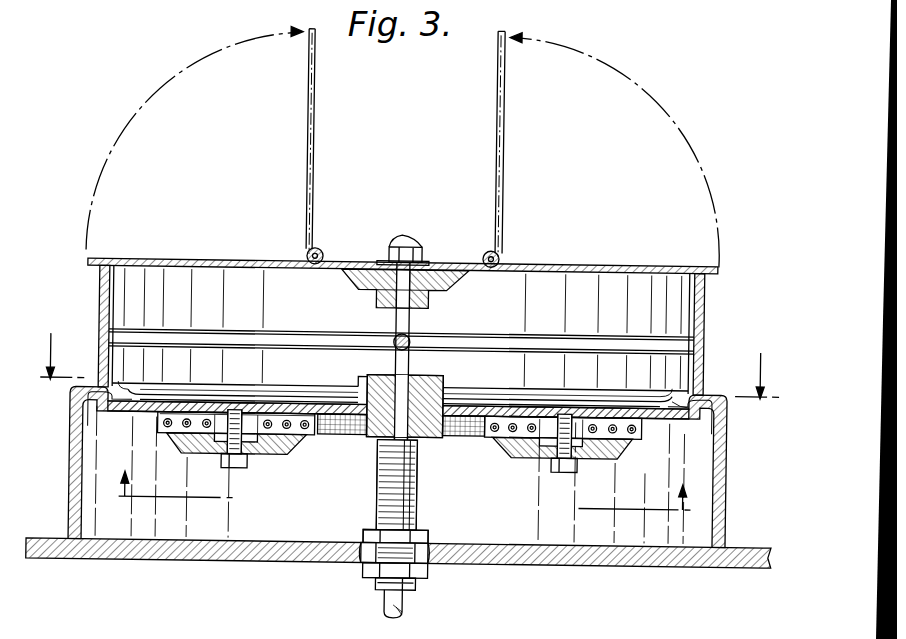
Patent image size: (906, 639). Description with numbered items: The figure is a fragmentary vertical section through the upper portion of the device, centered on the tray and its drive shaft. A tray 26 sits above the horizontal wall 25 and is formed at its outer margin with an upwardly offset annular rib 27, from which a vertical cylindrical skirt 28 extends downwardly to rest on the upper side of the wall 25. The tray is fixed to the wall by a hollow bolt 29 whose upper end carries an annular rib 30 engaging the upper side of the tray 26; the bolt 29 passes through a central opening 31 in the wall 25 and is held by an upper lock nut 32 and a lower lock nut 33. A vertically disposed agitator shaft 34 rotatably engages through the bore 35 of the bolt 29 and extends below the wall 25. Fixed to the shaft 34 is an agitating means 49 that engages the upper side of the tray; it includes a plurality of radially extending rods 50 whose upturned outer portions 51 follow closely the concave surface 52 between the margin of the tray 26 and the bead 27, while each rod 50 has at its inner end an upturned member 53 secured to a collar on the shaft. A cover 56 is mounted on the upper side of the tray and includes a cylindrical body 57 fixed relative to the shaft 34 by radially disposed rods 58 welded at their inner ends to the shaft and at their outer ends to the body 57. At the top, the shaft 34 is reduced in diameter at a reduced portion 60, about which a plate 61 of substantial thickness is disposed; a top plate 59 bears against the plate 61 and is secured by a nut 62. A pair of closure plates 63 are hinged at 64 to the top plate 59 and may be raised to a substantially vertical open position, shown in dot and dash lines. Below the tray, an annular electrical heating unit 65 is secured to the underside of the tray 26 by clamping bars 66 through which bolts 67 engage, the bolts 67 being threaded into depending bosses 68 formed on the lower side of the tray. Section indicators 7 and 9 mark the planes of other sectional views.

The section line 7- 7 is at (410, 356).
The section line 9- 9 is at (405, 478).
The horizontal wall 25 is at (566, 564).
The tray 26 is at (650, 421).
The annular rib 27 is at (711, 395).
The cylindrical skirt 28 is at (728, 472).
The hollow bolt 29 is at (379, 466).
The annular rib 30 is at (434, 395).
The central opening 31 is at (370, 568).
The upper lock nut 32 is at (426, 534).
The lower lock nut 33 is at (428, 571).
The agitator shaft 34 is at (409, 329).
The bore 35 is at (412, 441).
The agitating means 49 is at (512, 398).
The radially extending rods 50 is at (569, 397).
The upturned outer portions 51 is at (688, 394).
The concave surface 52 is at (690, 412).
The upturned member 53 is at (441, 383).
The cover 56 is at (708, 304).
The cylindrical body 57 is at (705, 320).
The radially disposed rods 58 is at (531, 337).
The top plate 59 is at (445, 268).
The reduced portion 60 is at (399, 292).
The plate 61 is at (368, 282).
The nut 62 is at (400, 238).
The closure plates 63 is at (552, 263).
The hinge 64 is at (496, 253).
The electrical heating unit 65 is at (162, 434).
The clamping bars 66 is at (196, 456).
The bolts 67 is at (238, 470).
The depending bosses 68 is at (220, 414).